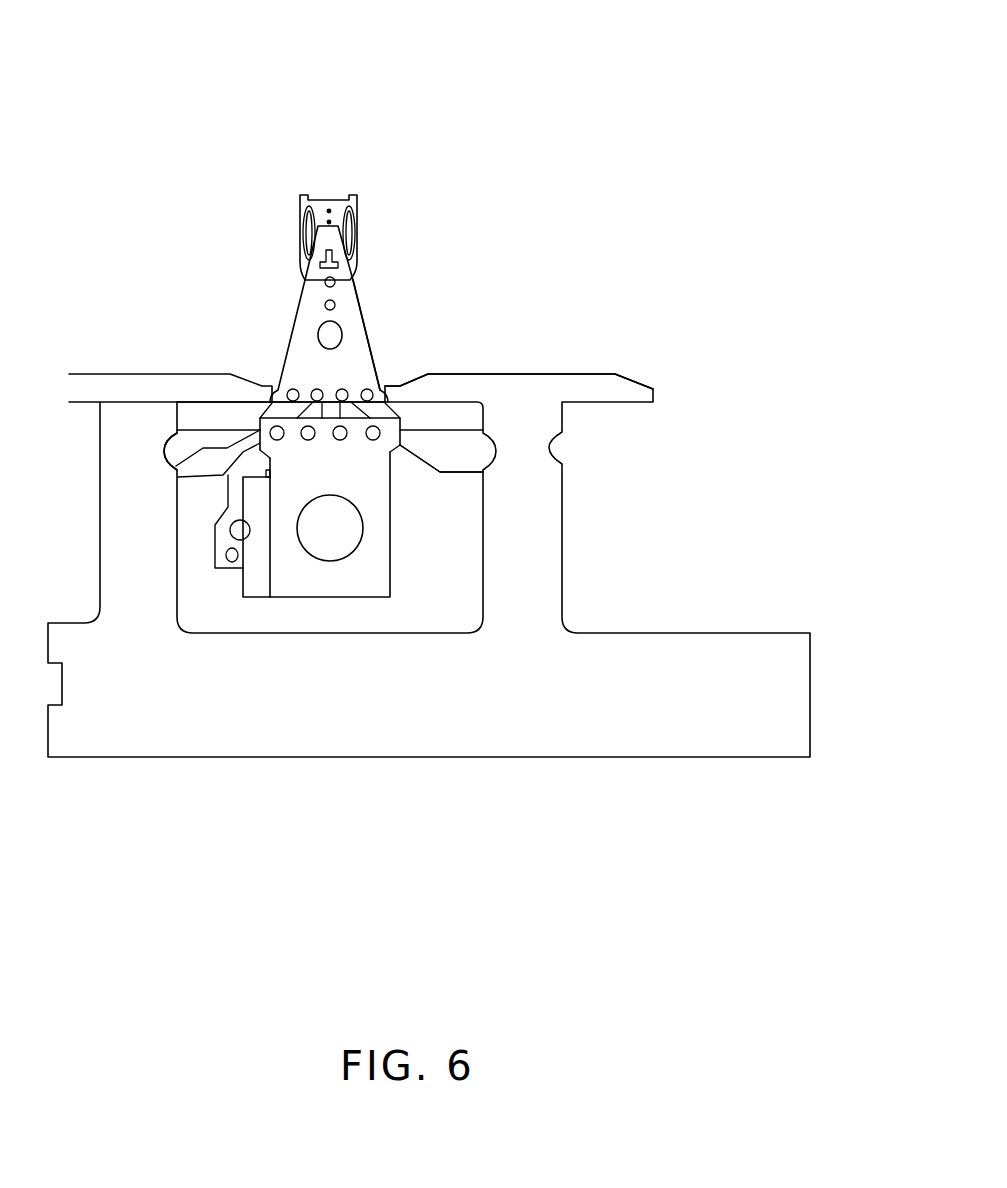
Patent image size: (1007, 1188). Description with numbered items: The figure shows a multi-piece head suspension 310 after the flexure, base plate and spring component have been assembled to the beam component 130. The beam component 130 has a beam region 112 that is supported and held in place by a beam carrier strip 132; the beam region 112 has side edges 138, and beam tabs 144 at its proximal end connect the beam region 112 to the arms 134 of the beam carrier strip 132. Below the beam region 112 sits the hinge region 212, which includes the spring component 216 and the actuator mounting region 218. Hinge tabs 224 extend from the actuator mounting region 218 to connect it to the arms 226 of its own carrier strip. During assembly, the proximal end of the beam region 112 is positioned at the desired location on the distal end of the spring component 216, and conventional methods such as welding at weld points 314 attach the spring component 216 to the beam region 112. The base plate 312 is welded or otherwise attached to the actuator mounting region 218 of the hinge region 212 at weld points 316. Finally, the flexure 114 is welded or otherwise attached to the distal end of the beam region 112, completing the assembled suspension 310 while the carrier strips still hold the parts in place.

The multi-piece head suspension 310 is at (491, 147).
The beam component 130 is at (260, 180).
The flexure 114 is at (333, 216).
The side edges 138 is at (286, 308).
The beam region 112 is at (357, 322).
The weld points 314 is at (364, 350).
The beam tabs 144 is at (388, 392).
The arms 134 is at (518, 412).
The beam carrier strip 132 is at (649, 545).
The spring component 216 is at (282, 412).
The weld points 316 is at (178, 455).
The hinge tabs 224 is at (400, 445).
The arms 226 is at (450, 455).
The base plate 312 is at (353, 572).
The hinge region 212 is at (215, 623).
The actuator mounting region 218 is at (257, 585).